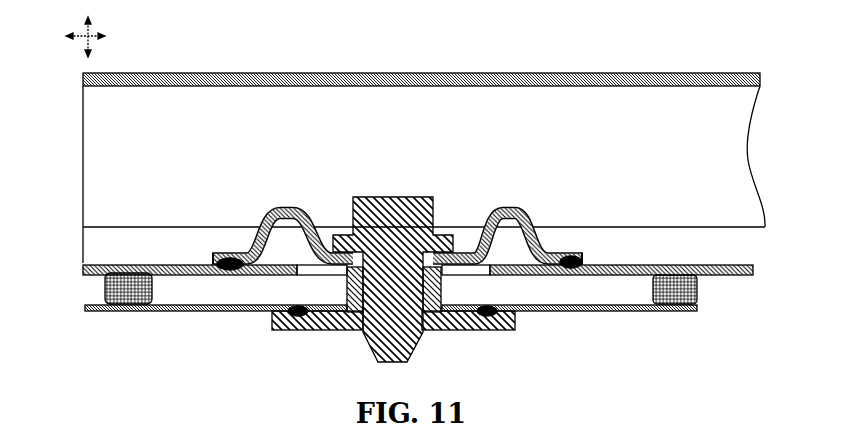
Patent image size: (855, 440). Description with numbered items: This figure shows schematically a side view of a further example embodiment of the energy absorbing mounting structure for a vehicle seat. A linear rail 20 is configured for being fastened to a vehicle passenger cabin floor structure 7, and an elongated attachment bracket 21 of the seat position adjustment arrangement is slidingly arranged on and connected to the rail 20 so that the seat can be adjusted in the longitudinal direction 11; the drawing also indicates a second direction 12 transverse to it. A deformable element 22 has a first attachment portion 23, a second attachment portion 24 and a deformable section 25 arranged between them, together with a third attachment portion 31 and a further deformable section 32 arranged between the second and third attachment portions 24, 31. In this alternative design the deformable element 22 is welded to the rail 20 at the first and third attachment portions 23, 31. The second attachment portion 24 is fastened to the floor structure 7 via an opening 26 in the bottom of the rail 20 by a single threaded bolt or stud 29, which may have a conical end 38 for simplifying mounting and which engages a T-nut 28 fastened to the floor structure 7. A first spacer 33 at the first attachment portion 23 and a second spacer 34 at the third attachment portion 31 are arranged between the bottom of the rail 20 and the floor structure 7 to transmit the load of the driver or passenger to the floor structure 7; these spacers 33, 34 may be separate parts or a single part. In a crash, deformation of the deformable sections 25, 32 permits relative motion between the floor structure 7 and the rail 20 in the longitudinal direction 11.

The vehicle passenger cabin floor structure 7 is at (113, 306).
The longitudinal direction 11 is at (100, 36).
The second direction 12 is at (99, 28).
The rail 20 is at (555, 275).
The attachment bracket 21 is at (668, 74).
The deformable element 22 is at (324, 210).
The first attachment portion 23 is at (247, 273).
The second attachment portion 24 is at (458, 277).
The deformable section 25 is at (290, 206).
The opening 26 is at (325, 273).
The T-nut 28 is at (287, 330).
The threaded bolt or stud 29 is at (393, 198).
The third attachment portion 31 is at (571, 268).
The further deformable section 32 is at (522, 212).
The first spacer 33 is at (142, 305).
The second spacer 34 is at (665, 311).
The conical end 38 is at (372, 345).